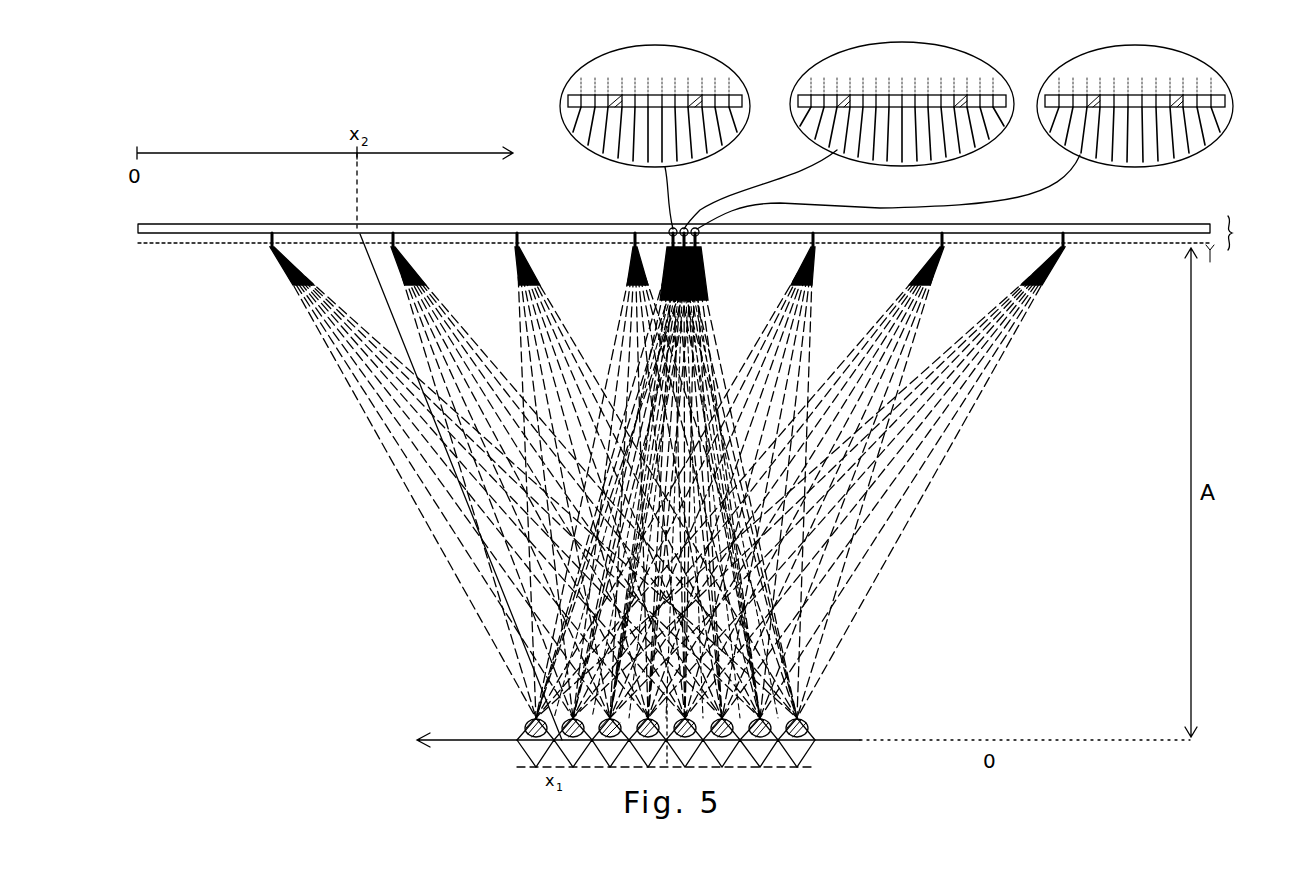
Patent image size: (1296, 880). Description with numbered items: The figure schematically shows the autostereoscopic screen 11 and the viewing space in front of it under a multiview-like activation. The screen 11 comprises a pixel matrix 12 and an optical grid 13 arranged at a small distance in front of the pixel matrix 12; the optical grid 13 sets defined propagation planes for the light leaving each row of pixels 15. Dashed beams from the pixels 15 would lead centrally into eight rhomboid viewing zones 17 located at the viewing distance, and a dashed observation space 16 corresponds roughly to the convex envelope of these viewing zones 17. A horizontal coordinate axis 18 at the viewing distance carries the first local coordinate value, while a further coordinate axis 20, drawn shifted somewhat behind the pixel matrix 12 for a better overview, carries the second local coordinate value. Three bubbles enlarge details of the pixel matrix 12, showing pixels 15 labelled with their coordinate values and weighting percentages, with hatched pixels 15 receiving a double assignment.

The autostereoscopic screen 11 is at (705, 239).
The pixel matrix 12 is at (215, 225).
The optical grid 13 is at (190, 246).
The pixels 15 is at (1213, 128).
The observation space 16 is at (815, 732).
The viewing zones 17 is at (812, 752).
The coordinate axis 18 is at (455, 737).
The further coordinate axis 20 is at (490, 160).